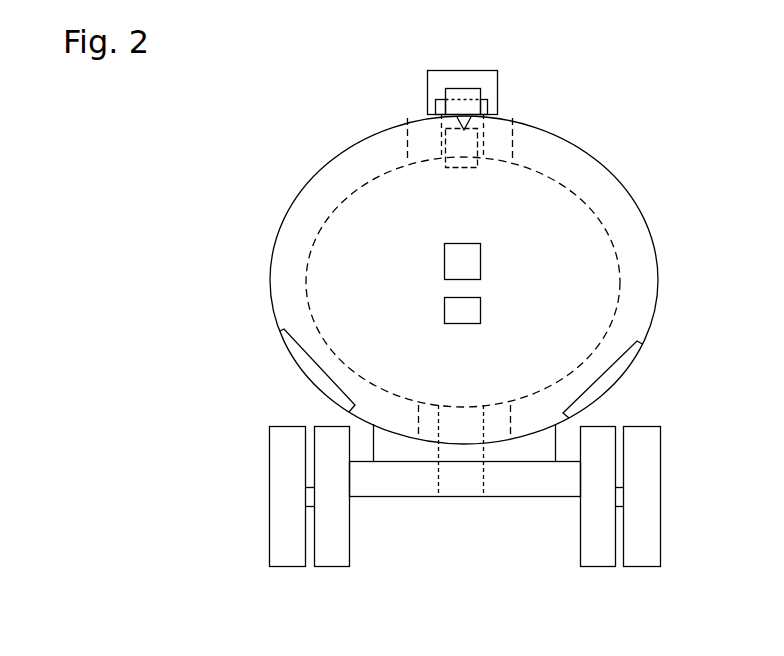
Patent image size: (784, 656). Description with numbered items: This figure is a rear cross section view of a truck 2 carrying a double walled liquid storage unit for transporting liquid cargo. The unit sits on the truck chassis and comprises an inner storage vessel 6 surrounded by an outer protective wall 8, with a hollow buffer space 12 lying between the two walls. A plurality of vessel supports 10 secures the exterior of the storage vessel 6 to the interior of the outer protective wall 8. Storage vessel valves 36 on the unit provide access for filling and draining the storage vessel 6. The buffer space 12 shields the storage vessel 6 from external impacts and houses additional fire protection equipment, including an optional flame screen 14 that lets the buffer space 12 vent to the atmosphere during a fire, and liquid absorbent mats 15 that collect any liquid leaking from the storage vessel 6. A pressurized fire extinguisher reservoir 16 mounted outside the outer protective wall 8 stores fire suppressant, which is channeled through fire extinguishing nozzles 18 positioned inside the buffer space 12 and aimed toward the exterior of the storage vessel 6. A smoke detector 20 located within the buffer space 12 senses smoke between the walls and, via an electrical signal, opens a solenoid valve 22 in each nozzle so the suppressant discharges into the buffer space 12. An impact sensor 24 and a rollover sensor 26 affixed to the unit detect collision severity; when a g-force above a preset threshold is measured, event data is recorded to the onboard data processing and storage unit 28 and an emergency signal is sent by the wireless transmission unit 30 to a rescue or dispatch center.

The truck 2 is at (525, 497).
The storage vessel 6 is at (593, 210).
The outer protective wall 8 is at (659, 268).
The vessel supports 10 is at (500, 157).
The buffer space 12 is at (623, 340).
The flame screen 14 is at (438, 104).
The liquid absorbent mats 15 is at (312, 373).
The fire extinguisher reservoir 16 is at (449, 70).
The fire extinguishing nozzles 18 is at (460, 114).
The smoke detector 20 is at (463, 170).
The solenoid valve 22 is at (460, 114).
The impact sensor 24 is at (470, 310).
The rollover sensor 26 is at (452, 266).
The data processing and storage unit 28 is at (480, 99).
The wireless transmission unit 30 is at (480, 99).
The storage vessel valves 36 is at (483, 122).